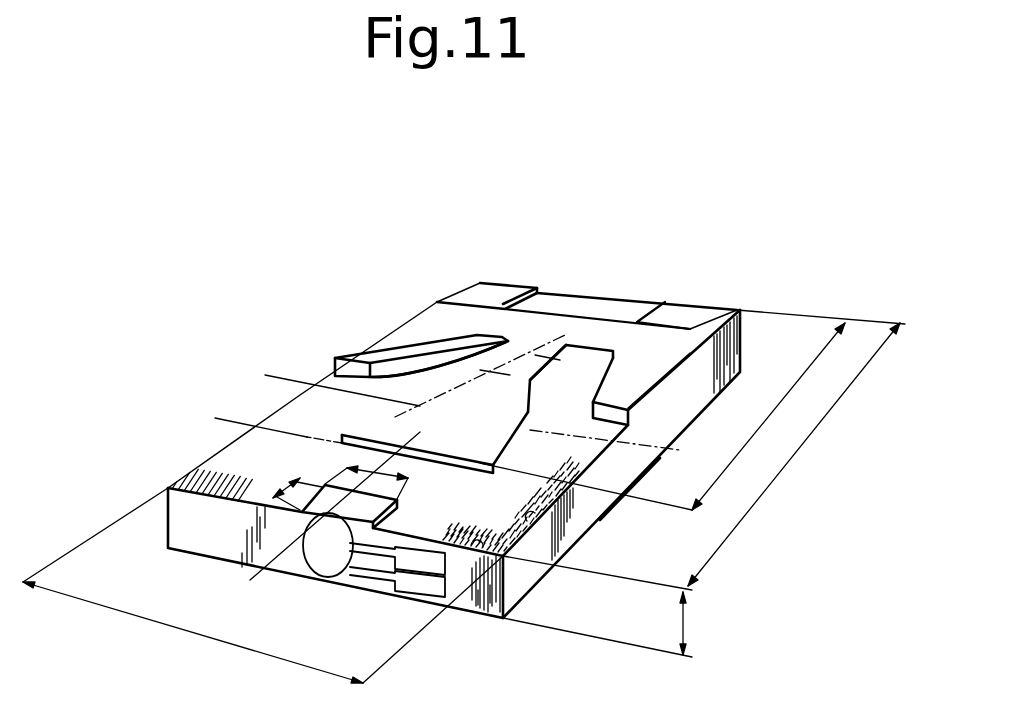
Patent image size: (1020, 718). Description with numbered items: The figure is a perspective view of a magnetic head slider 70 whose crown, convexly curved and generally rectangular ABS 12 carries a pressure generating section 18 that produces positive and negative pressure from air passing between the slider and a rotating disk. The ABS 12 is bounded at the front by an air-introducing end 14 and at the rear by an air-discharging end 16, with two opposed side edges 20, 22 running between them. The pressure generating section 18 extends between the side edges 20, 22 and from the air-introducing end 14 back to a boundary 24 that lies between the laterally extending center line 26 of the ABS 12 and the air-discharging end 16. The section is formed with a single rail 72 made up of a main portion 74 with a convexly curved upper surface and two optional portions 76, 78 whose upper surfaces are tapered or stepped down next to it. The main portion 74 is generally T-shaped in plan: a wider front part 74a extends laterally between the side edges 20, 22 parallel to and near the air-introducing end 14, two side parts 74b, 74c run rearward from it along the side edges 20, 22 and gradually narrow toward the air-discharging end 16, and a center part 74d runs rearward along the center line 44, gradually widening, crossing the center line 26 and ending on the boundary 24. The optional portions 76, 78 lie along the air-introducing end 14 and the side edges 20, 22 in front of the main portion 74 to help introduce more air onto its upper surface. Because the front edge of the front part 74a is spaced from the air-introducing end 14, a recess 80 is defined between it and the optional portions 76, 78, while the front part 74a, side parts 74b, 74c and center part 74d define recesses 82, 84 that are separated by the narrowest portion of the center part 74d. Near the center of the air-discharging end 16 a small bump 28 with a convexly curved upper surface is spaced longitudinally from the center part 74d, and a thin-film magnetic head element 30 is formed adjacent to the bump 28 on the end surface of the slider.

The ABS 12 is at (329, 377).
The air-introducing end 14 is at (645, 298).
The air-discharging end 16 is at (497, 556).
The pressure generating section 18 is at (495, 378).
The side edge 20 is at (197, 460).
The side edge 22 is at (543, 513).
The boundary 24 is at (640, 503).
The center line 26 is at (680, 450).
The bump 28 is at (408, 568).
The thin-film magnetic head element 30 is at (327, 549).
The center line 44 is at (598, 288).
The magnetic head slider 70 is at (539, 222).
The rail 72 is at (565, 340).
The main portion 74 is at (521, 336).
The front part 74a is at (593, 328).
The side part 74b is at (372, 353).
The side part 74c is at (580, 380).
The center part 74d is at (377, 422).
The optional portion 76 is at (503, 290).
The optional portion 78 is at (693, 300).
The recess 80 is at (545, 334).
The recess 82 is at (462, 357).
The recess 84 is at (633, 380).